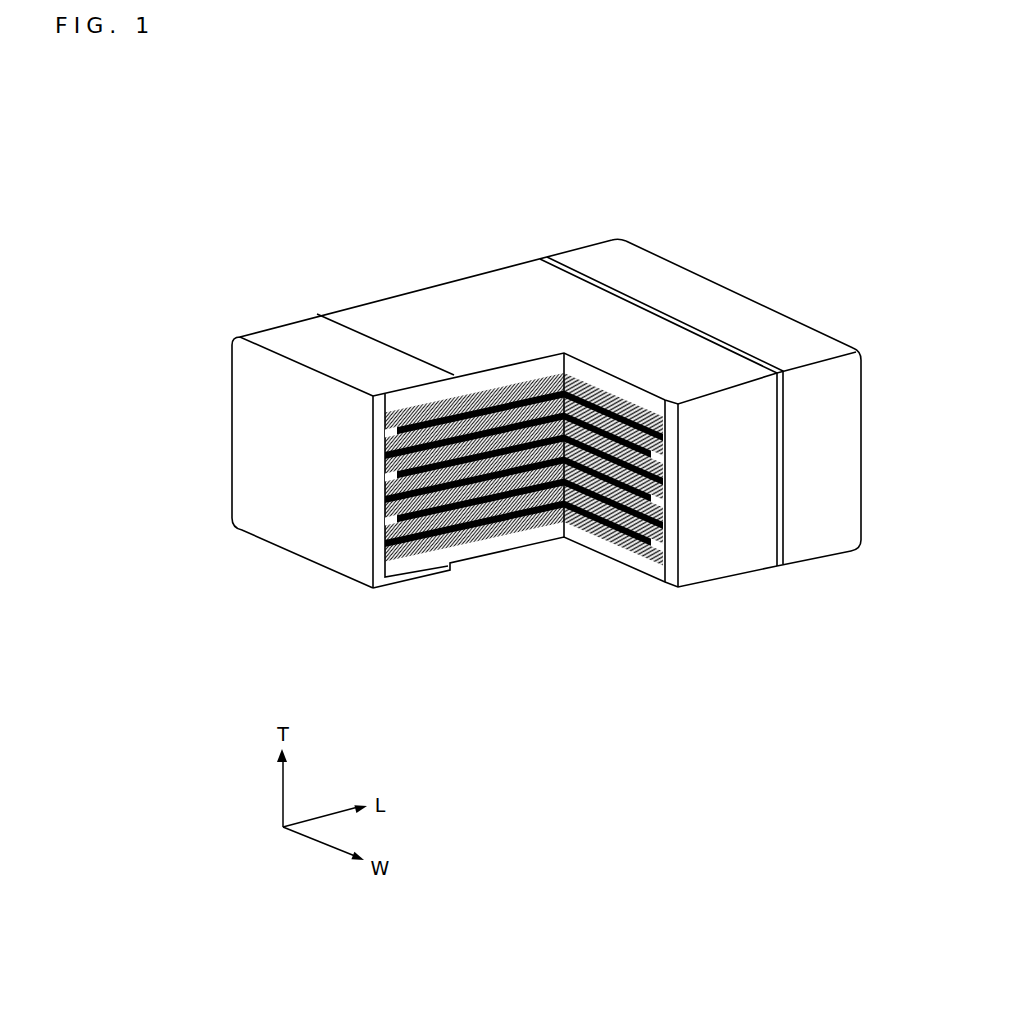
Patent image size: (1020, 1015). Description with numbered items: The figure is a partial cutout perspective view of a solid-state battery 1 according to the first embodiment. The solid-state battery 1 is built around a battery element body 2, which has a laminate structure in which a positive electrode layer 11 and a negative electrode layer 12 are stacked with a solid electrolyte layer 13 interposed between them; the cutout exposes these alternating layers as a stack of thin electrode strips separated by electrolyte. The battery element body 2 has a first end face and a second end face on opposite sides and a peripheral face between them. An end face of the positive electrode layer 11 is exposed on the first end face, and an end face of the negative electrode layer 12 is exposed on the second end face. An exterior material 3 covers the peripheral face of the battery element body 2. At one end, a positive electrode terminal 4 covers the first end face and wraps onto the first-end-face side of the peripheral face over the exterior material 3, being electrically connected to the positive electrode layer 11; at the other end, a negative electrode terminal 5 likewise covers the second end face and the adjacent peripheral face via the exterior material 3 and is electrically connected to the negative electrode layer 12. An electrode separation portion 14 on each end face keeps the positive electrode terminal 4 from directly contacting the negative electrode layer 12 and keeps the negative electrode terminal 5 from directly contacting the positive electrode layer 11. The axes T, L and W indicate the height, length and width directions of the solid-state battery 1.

The solid-state battery 1 is at (529, 191).
The battery element body 2 is at (507, 513).
The exterior material 3 is at (462, 308).
The positive electrode terminal 4 is at (303, 348).
The negative electrode terminal 5 is at (682, 292).
The positive electrode layer 11 is at (383, 457).
The negative electrode layer 12 is at (667, 406).
The solid electrolyte layer 13 is at (632, 412).
The electrode separation portion 14 is at (383, 437).